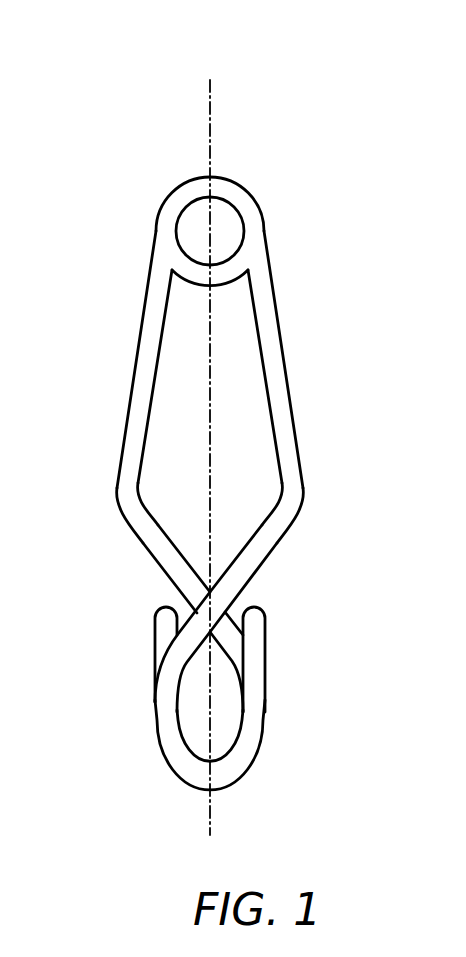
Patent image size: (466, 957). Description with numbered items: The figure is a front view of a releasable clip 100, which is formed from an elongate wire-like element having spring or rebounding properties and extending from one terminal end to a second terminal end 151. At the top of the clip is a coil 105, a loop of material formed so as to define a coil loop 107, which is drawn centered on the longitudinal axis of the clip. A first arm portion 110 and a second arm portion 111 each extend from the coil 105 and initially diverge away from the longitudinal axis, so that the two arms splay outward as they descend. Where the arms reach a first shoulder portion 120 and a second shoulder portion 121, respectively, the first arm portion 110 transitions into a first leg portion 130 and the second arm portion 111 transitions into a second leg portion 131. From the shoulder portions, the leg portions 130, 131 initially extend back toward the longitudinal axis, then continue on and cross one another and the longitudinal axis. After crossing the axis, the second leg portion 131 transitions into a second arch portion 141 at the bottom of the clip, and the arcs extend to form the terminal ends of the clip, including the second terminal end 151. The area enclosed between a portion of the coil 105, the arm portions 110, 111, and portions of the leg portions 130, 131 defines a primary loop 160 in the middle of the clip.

The releasable clip 100 is at (207, 434).
The coil 105 is at (190, 270).
The coil loop 107 is at (210, 218).
The first arm portion 110 is at (140, 407).
The second arm portion 111 is at (276, 357).
The primary loop 160 is at (183, 375).
The first shoulder portion 120 is at (125, 495).
The second shoulder portion 121 is at (287, 495).
The first leg portion 130 is at (172, 570).
The second leg portion 131 is at (252, 566).
The second terminal end 151 is at (257, 606).
The second arch portion 141 is at (178, 753).